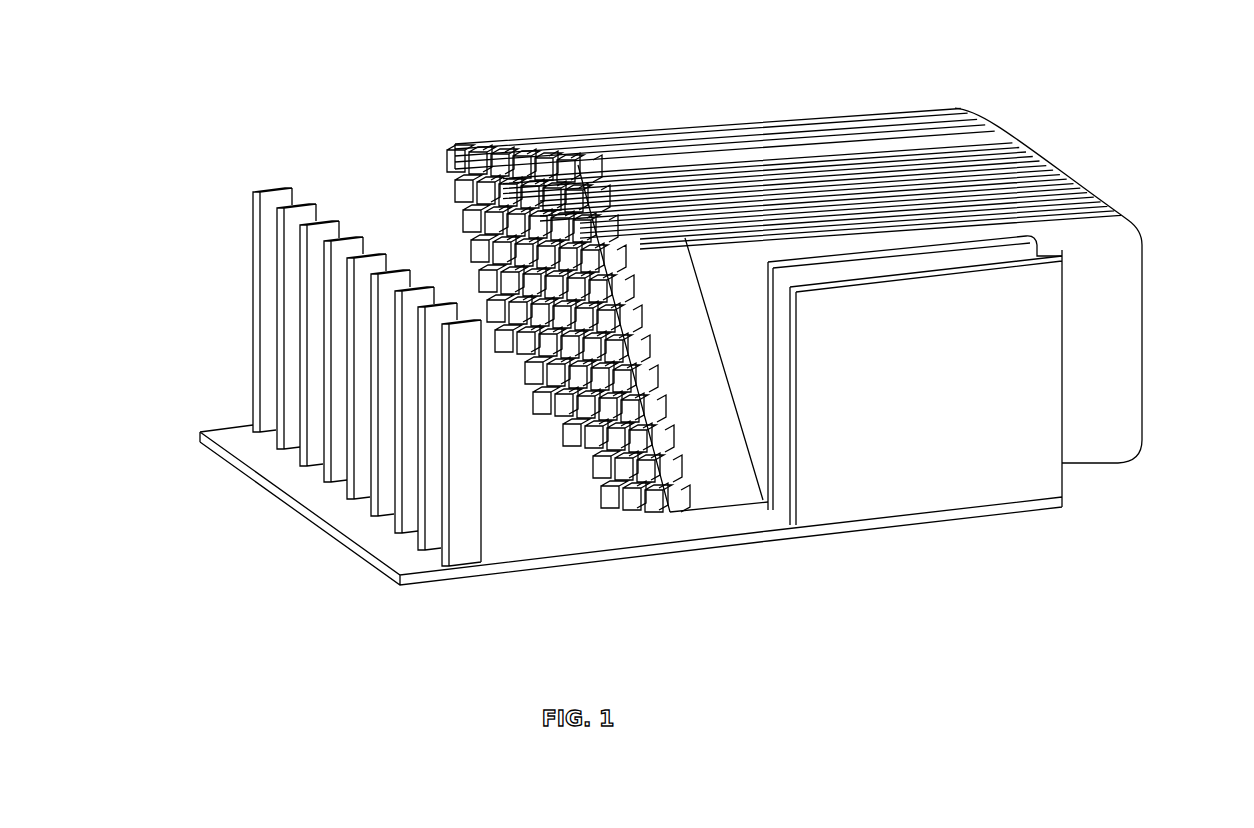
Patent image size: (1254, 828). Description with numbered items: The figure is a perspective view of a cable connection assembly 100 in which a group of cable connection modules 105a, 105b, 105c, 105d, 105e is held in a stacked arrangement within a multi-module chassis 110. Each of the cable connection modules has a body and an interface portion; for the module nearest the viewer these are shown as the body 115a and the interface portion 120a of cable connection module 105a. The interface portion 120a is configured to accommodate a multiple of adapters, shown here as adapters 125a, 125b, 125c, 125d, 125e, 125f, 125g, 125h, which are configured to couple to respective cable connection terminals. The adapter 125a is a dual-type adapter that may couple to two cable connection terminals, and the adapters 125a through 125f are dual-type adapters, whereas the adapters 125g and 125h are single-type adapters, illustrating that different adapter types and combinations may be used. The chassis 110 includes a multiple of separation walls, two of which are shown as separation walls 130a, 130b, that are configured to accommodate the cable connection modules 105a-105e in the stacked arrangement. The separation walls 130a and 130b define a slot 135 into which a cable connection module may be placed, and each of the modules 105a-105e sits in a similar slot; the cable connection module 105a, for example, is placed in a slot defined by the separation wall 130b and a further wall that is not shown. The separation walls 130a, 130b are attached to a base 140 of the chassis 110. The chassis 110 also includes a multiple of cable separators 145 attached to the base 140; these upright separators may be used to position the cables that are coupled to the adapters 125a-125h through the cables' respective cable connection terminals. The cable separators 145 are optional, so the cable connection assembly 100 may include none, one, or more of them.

The cable connection assembly 100 is at (513, 31).
The cable connection module 105a is at (1127, 227).
The cable connection module 105b is at (1073, 180).
The cable connection module 105c is at (1050, 162).
The cable connection module 105d is at (1027, 143).
The cable connection module 105e is at (987, 113).
The multi-module chassis 110 is at (218, 465).
The body 115a is at (1107, 433).
The interface portion 120a is at (712, 482).
The adapter 125a is at (587, 265).
The adapter 125b is at (612, 330).
The adapter 125c is at (622, 360).
The adapter 125d is at (630, 390).
The adapter 125e is at (637, 412).
The adapter 125f is at (645, 440).
The adapter 125g is at (648, 460).
The adapter 125h is at (657, 495).
The separation wall 130a is at (923, 493).
The separation wall 130b is at (777, 508).
The slot 135 is at (1056, 240).
The base 140 is at (1020, 505).
The cable separators 145 is at (438, 282).